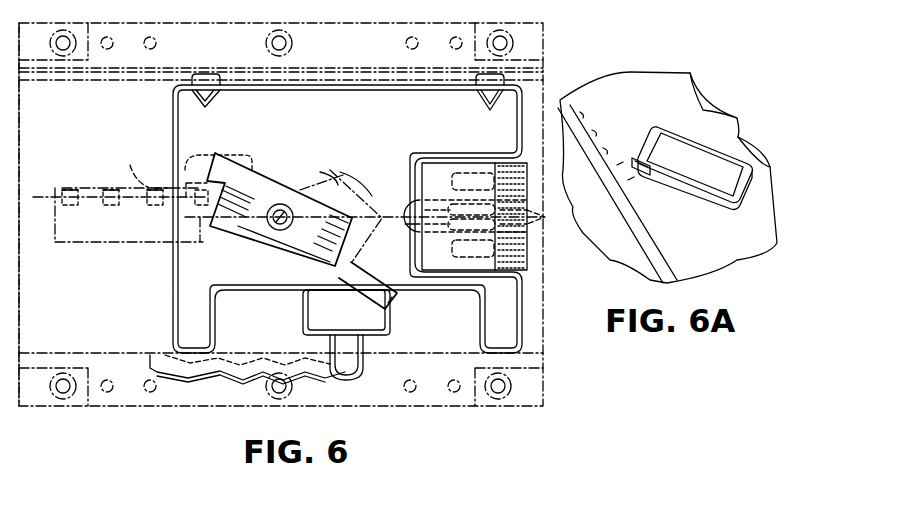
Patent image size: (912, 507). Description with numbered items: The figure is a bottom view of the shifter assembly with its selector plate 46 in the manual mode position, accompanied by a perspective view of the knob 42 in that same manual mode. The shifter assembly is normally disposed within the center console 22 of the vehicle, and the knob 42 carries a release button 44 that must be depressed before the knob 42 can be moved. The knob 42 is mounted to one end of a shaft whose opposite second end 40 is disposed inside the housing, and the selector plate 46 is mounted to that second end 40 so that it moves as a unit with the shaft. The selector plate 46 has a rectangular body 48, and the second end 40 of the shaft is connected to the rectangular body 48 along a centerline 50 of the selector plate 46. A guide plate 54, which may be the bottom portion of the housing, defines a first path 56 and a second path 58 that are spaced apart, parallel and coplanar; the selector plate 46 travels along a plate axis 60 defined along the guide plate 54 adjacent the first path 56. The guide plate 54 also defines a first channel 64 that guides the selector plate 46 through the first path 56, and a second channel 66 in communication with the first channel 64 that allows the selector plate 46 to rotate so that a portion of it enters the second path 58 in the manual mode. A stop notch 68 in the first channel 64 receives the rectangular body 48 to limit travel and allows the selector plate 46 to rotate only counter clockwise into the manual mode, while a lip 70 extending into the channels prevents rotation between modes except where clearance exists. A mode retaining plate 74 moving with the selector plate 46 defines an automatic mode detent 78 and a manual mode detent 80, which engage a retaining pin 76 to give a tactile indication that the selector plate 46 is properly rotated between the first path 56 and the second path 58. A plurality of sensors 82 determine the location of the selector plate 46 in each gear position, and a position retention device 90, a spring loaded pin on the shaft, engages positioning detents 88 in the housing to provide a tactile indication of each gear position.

In FIG. 6A, the center console 22 is at (639, 85).
In FIG. 6A, the knob 42 is at (675, 142).
In FIG. 6A, the release button 44 is at (645, 176).
In FIG. 6, the second end 40 is at (280, 222).
In FIG. 6, the selector plate 46 is at (240, 228).
In FIG. 6, the rectangular body 48 is at (270, 182).
In FIG. 6, the centerline 50 is at (350, 240).
In FIG. 6, the guide plate 54 is at (537, 340).
In FIG. 6, the first path 56 is at (45, 196).
In FIG. 6, the second path 58 is at (172, 177).
In FIG. 6, the plate axis 60 is at (186, 244).
In FIG. 6, the first channel 64 is at (80, 231).
In FIG. 6, the second channel 66 is at (393, 226).
In FIG. 6, the stop notch 68 is at (335, 172).
In FIG. 6, the lip 70 is at (145, 165).
In FIG. 6, the mode retaining plate 74 is at (302, 314).
In FIG. 6, the retaining pin 76 is at (402, 202).
In FIG. 6, the automatic mode detent 78 is at (377, 293).
In FIG. 6, the manual mode detent 80 is at (405, 207).
In FIG. 6, the sensors 82 is at (110, 190).
In FIG. 6, the positioning detents 88 is at (213, 384).
In FIG. 6, the position retention device 90 is at (334, 348).